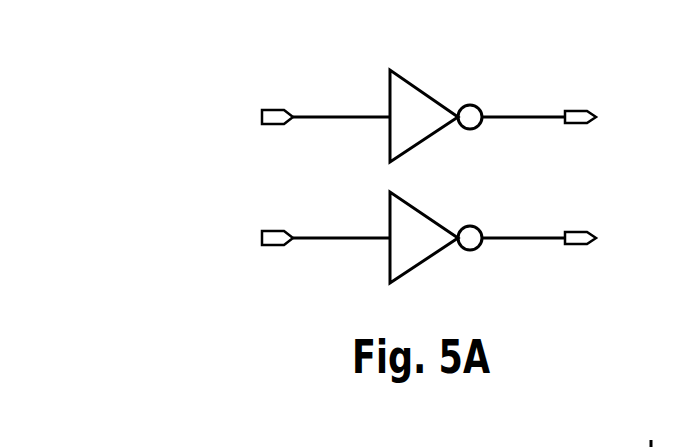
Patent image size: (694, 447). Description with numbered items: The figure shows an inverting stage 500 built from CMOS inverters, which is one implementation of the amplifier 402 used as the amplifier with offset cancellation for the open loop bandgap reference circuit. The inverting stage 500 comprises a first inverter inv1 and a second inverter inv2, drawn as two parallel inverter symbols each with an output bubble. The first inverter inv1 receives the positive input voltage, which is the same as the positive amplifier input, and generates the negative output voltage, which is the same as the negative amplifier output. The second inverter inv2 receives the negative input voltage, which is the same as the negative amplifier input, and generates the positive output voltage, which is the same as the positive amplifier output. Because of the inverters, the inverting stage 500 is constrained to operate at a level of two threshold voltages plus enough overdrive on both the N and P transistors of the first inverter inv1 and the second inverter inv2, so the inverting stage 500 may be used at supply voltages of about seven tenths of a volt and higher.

The inverting stage 500 is at (285, 60).
The amplifier 402 is at (427, 161).
The first inverter inv1 is at (436, 116).
The second inverter inv2 is at (436, 237).